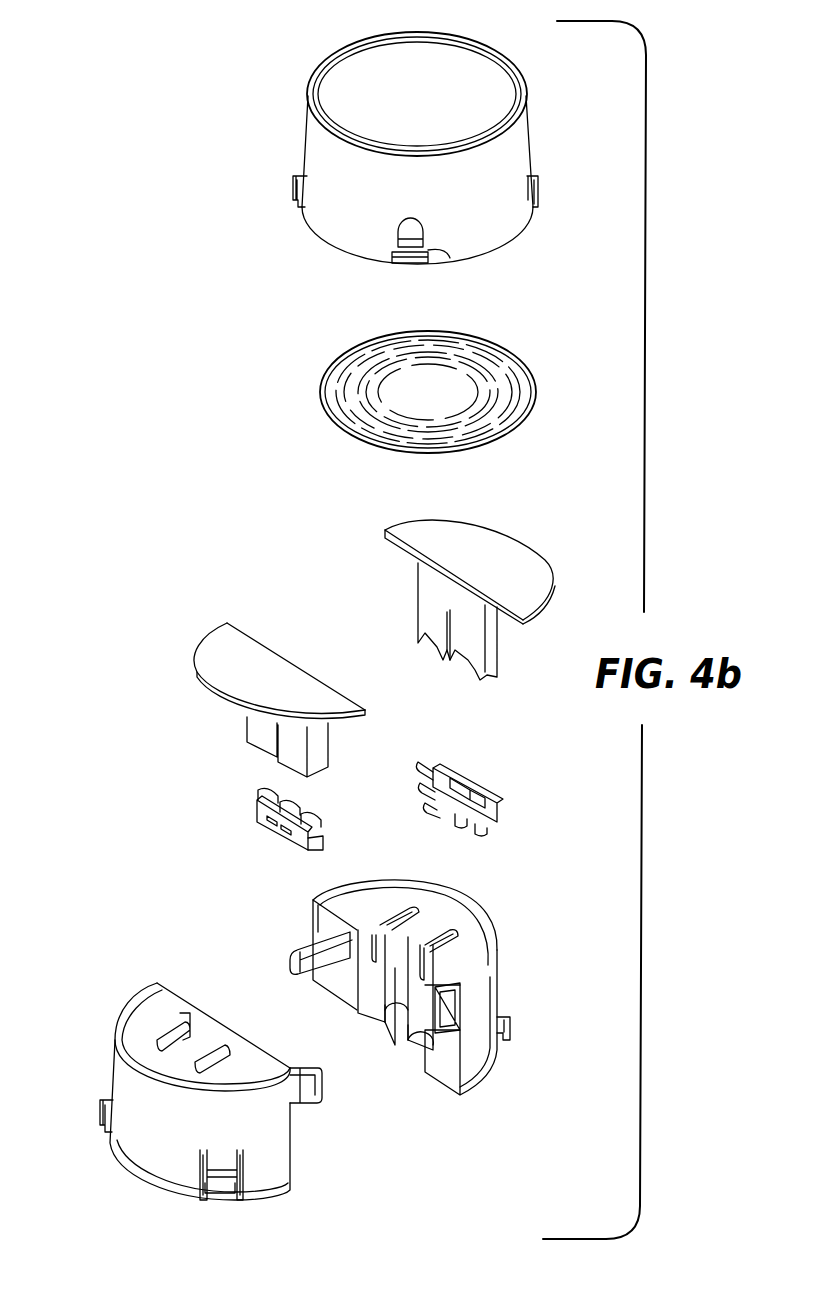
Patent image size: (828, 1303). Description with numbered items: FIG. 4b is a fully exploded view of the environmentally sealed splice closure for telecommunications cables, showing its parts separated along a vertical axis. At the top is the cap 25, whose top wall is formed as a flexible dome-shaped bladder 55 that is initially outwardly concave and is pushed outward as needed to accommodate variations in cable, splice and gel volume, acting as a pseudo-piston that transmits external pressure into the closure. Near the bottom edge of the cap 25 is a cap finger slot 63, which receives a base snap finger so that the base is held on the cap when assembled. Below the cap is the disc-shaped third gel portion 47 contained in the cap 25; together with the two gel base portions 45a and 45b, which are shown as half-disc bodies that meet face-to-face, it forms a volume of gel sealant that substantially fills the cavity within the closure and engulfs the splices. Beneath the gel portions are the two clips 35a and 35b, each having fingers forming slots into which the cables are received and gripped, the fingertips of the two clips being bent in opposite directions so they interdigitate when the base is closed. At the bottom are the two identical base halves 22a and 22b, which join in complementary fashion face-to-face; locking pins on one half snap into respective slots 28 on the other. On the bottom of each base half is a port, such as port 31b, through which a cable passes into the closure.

The cap 25 is at (298, 124).
The dome-shaped bladder 55 is at (378, 58).
The cap finger slot 63 is at (450, 258).
The third gel portion 47 is at (360, 360).
The gel base portion 45a is at (220, 678).
The gel base portion 45b is at (425, 530).
The clip 35a is at (257, 820).
The clip 35b is at (450, 765).
The base half 22a is at (193, 1107).
The base half 22b is at (393, 987).
The slot 28 is at (440, 1000).
The port 31b is at (380, 1028).